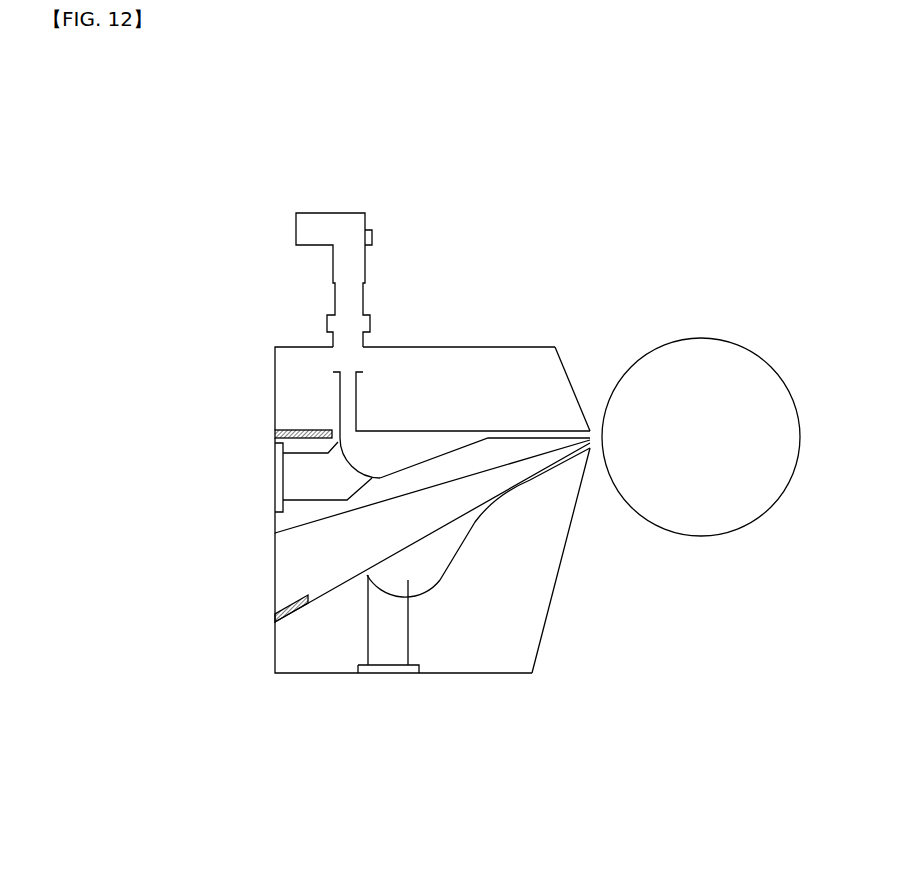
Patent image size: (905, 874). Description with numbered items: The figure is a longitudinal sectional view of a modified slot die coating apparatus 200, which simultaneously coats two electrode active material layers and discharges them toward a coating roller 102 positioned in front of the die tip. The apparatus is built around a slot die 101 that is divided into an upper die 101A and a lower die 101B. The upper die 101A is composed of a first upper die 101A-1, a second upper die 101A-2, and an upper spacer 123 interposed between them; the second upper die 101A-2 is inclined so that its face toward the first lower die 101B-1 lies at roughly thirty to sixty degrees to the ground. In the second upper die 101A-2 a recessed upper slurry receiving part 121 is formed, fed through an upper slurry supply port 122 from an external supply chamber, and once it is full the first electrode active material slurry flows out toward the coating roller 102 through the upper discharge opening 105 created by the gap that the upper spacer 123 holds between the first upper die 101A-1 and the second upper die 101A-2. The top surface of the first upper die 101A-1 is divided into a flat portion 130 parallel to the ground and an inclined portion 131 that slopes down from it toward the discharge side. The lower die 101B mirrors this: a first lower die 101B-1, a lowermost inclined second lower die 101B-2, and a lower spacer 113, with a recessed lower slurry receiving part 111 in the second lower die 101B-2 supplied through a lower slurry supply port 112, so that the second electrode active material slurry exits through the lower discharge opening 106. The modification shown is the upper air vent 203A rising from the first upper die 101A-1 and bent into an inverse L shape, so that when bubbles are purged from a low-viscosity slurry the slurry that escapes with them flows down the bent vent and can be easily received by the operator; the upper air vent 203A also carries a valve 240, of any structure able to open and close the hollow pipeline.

The slot die coating apparatus 200 is at (444, 106).
The coating roller 102 is at (702, 350).
The upper air vent 203A is at (328, 213).
The valve 240 is at (374, 230).
The slot die 101 is at (102, 453).
The upper die 101A is at (168, 398).
The first upper die 101A-1 is at (278, 413).
The second upper die 101A-2 is at (278, 517).
The lower die 101B is at (168, 550).
The first lower die 101B-1 is at (278, 577).
The second lower die 101B-2 is at (278, 653).
The flat portion 130 is at (510, 347).
The inclined portion 131 is at (560, 358).
The upper discharge opening 105 is at (562, 438).
The upper slurry receiving part 121 is at (400, 445).
The upper slurry supply port 122 is at (300, 480).
The upper spacer 123 is at (320, 428).
The lower discharge opening 106 is at (543, 468).
The lower slurry receiving part 111 is at (430, 563).
The lower slurry supply port 112 is at (390, 657).
The lower spacer 113 is at (293, 617).